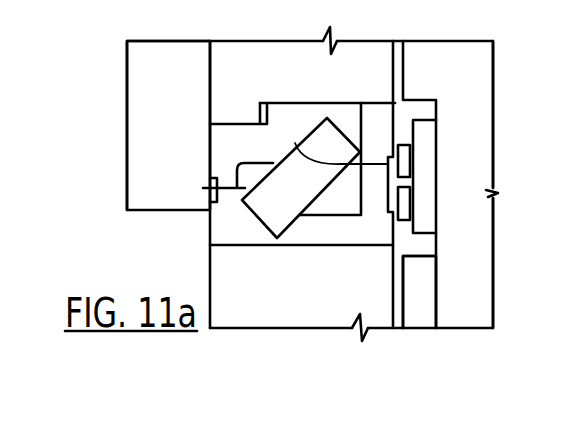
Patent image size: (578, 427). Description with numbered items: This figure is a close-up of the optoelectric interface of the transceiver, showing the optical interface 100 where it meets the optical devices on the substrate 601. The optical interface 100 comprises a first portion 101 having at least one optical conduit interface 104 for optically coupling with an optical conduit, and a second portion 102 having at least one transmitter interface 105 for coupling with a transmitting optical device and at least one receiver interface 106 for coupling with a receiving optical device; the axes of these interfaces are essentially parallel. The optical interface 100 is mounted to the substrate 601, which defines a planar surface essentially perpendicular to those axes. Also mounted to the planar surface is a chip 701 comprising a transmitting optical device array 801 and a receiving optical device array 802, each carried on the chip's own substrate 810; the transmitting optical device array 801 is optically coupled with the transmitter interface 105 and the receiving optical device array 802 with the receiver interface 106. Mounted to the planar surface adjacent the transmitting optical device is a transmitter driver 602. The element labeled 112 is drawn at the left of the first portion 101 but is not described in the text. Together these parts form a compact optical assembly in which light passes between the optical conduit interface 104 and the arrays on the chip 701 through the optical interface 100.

The optical interface 100 is at (168, 30).
The first portion 101 is at (222, 150).
The second portion 102 is at (381, 239).
The optical conduit interface 104 is at (240, 192).
The transmitter interface 105 is at (352, 214).
The receiver interface 106 is at (313, 83).
The connector body 112 is at (134, 179).
The substrate 601 is at (477, 162).
The transmitter driver 602 is at (420, 315).
The chip 701 is at (423, 126).
The transmitting optical device array 801 is at (405, 203).
The receiving optical device array 802 is at (403, 155).
The substrate 810 is at (430, 153).